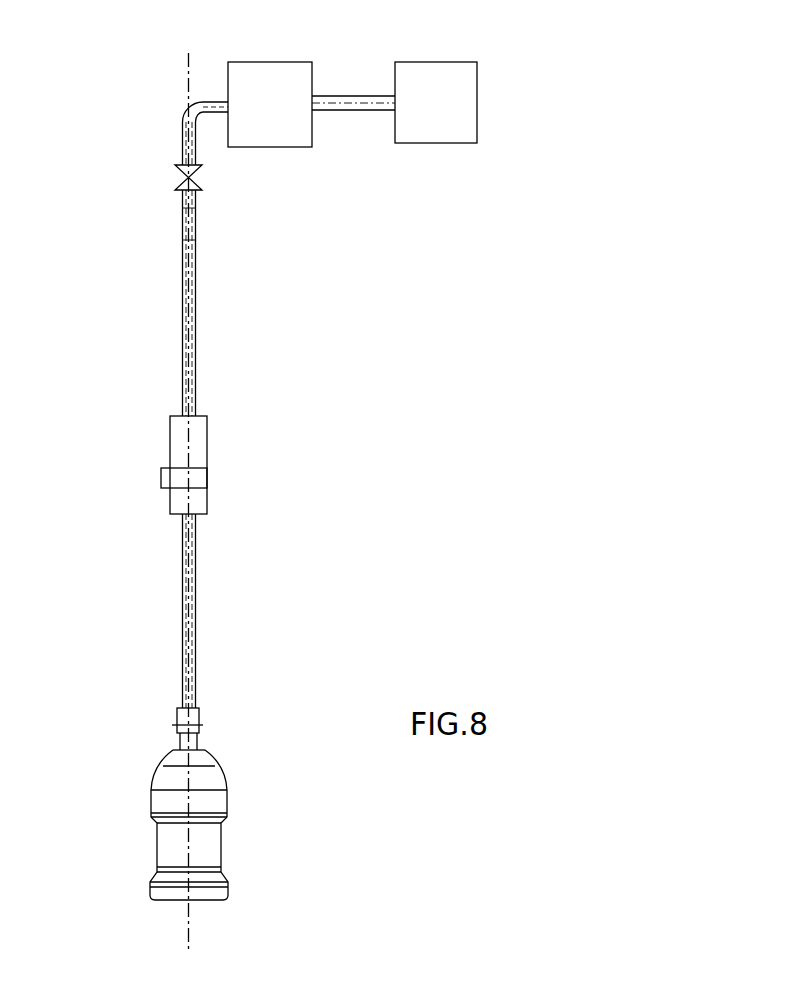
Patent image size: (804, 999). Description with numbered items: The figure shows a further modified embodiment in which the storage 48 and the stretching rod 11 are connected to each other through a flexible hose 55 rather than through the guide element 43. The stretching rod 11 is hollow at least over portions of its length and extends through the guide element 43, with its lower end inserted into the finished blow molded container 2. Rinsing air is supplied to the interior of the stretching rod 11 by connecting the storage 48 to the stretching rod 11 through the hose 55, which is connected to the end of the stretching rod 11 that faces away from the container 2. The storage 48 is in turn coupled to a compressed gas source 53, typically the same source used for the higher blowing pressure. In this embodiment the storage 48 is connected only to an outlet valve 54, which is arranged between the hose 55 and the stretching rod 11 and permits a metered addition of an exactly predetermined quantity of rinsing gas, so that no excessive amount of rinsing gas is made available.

The container 2 is at (158, 850).
The stretching rod 11 is at (197, 580).
The guide element 43 is at (170, 440).
The storage 48 is at (282, 137).
The compressed gas source 53 is at (427, 117).
The outlet valve 54 is at (176, 177).
The hose 55 is at (191, 103).